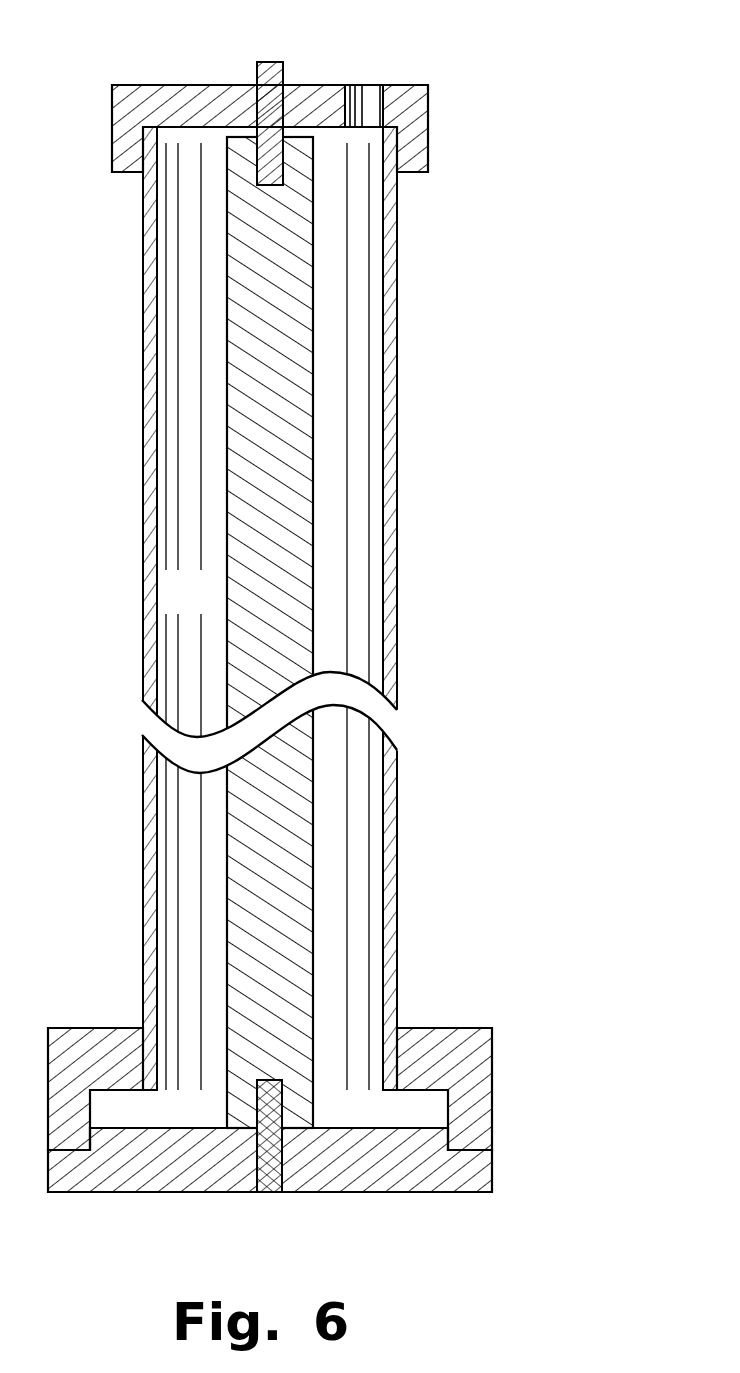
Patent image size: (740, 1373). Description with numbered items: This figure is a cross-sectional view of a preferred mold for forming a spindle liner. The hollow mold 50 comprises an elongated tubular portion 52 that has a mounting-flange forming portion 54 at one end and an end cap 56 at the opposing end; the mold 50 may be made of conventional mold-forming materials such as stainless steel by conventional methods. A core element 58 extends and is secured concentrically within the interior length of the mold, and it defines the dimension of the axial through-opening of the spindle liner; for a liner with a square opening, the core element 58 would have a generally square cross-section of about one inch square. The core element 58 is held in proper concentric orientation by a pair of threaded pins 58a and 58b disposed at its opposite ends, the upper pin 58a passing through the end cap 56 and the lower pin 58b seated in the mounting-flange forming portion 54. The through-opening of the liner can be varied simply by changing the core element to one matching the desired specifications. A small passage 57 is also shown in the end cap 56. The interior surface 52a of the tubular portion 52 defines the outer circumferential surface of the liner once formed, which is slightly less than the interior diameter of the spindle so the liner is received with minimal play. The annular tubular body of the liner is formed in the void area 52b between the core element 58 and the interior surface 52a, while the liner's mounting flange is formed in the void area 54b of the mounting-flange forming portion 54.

The hollow mold 50 is at (345, 619).
The elongated tubular portion 52 is at (313, 608).
The interior surface 52a is at (397, 680).
The void area 52b is at (222, 607).
The mounting-flange forming portion 54 is at (345, 1098).
The void area 54b is at (180, 1127).
The end cap 56 is at (241, 99).
The vent 57 is at (378, 100).
The core element 58 is at (319, 565).
The threaded pin 58a is at (270, 62).
The threaded pin 58b is at (270, 1193).